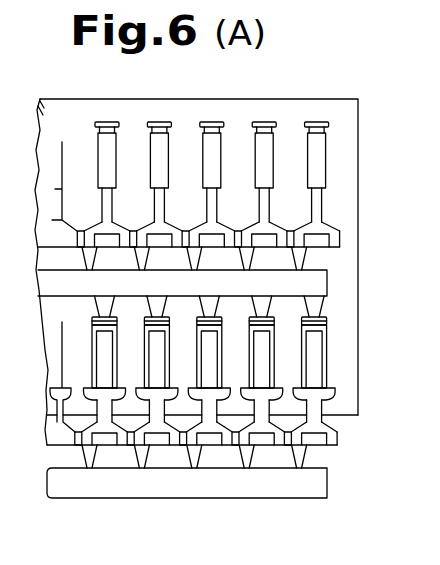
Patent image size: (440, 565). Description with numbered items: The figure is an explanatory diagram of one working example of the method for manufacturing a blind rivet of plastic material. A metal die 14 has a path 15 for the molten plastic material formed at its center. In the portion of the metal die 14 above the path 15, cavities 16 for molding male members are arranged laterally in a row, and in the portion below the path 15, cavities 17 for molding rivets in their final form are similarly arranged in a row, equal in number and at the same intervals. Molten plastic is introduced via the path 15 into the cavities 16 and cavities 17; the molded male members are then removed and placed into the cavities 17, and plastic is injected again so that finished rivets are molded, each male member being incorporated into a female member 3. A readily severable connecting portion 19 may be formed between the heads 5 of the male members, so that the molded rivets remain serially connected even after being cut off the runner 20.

The metal die 14 is at (315, 100).
The cavities for molding male members 16 is at (320, 160).
The path for the molten plastic material 15 is at (313, 283).
The cavities for molding rivets in their final form 17 is at (327, 342).
The lower plunger holder 3 is at (312, 377).
The heads of the male members 5 is at (330, 440).
The readily severable connecting portion 19 is at (235, 447).
The runner 20 is at (152, 490).